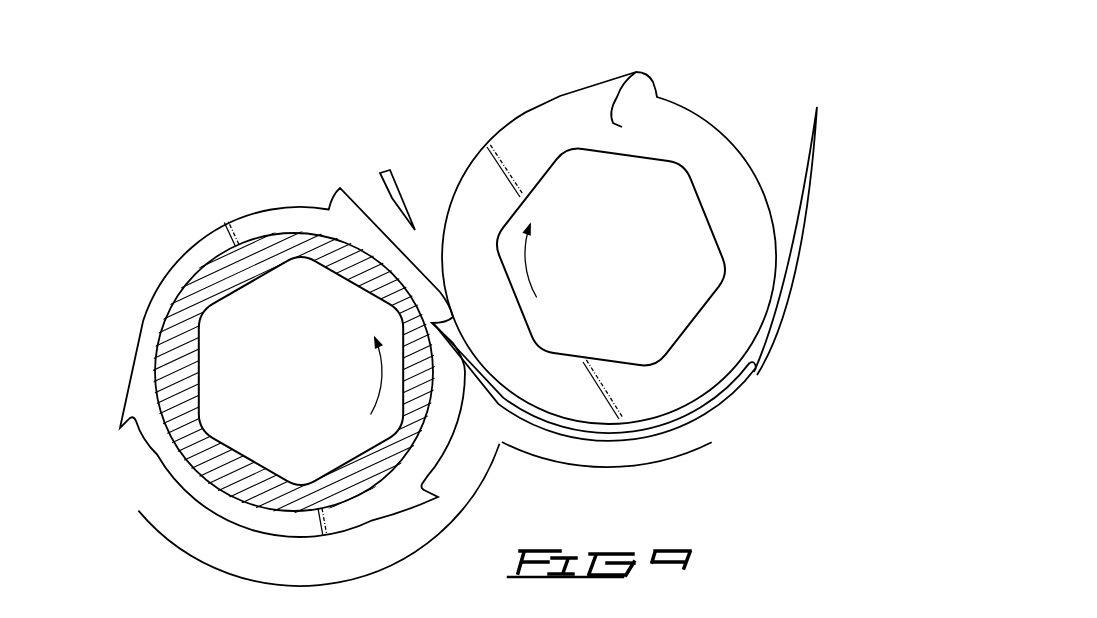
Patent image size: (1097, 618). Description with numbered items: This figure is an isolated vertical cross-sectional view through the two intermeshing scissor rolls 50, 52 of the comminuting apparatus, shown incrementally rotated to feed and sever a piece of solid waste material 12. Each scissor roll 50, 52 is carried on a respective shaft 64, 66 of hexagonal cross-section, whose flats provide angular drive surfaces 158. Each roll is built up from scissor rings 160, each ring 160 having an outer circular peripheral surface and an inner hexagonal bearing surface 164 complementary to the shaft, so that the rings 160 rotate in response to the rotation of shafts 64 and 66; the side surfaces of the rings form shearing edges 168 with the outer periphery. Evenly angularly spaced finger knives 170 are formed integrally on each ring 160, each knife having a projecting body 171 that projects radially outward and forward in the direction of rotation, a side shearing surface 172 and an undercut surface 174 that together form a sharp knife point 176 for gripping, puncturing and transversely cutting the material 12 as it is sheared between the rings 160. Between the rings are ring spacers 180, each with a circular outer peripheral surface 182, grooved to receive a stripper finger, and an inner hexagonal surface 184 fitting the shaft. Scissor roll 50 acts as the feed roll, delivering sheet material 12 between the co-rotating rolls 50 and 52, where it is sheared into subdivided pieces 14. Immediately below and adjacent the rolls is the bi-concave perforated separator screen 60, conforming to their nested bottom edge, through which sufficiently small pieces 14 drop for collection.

The solid waste material 12 is at (795, 300).
The subdivided pieces 14 is at (397, 198).
The scissor roll 50 is at (646, 247).
The scissor roll 52 is at (267, 338).
The separator screen 60 is at (633, 467).
The shaft 64 is at (640, 255).
The shaft 66 is at (324, 407).
The angular drive surfaces 158 is at (687, 323).
The scissor ring 160 is at (157, 307).
The inner hexagonal bearing surface 164 is at (677, 343).
The shearing edges 168 is at (277, 210).
The finger knives 170 is at (116, 417).
The projecting body 171 is at (125, 413).
The side shearing surface 172 is at (625, 72).
The undercut surface 174 is at (622, 127).
The knife point 176 is at (120, 428).
The ring spacer 180 is at (243, 477).
The circular outer peripheral surface 182 is at (217, 253).
The inner hexagonal surface 184 is at (267, 273).